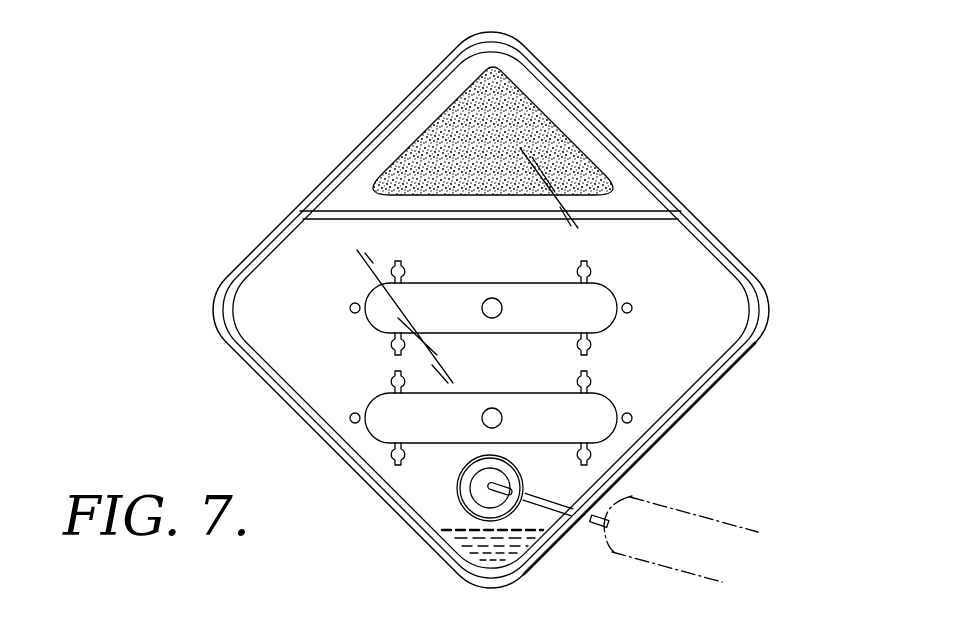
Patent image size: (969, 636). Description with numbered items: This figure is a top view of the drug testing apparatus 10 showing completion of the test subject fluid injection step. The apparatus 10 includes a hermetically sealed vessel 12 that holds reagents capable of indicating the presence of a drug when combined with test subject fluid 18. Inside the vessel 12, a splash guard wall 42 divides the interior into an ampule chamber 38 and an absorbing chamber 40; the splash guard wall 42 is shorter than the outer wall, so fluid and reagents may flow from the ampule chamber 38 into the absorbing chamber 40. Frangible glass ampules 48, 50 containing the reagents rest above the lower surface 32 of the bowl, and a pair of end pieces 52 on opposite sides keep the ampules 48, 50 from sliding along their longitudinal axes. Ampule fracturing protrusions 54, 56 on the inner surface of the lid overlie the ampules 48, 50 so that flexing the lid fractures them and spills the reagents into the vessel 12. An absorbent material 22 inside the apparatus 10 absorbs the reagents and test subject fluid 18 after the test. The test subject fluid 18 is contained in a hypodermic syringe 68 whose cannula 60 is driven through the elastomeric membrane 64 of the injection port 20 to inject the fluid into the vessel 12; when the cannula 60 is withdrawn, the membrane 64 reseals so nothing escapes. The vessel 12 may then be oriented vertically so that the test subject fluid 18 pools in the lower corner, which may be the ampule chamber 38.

The drug testing apparatus 10 is at (328, 110).
The vessel 12 is at (708, 400).
The test subject fluid 18 is at (547, 512).
The injection port 20 is at (455, 510).
The absorbent material 22 is at (558, 130).
The lower surface 32 is at (544, 265).
The ampule chamber 38 is at (287, 349).
The absorbing chamber 40 is at (629, 201).
The splash guard wall 42 is at (507, 221).
The frangible glass ampule 48 is at (603, 283).
The frangible glass ampule 50 is at (613, 396).
The end pieces 52 is at (350, 308).
The ampule fracturing protrusion 54 is at (500, 424).
The ampule fracturing protrusion 56 is at (500, 313).
The cannula 60 is at (597, 527).
The elastomeric membrane 64 is at (457, 480).
The hypodermic syringe 68 is at (693, 513).